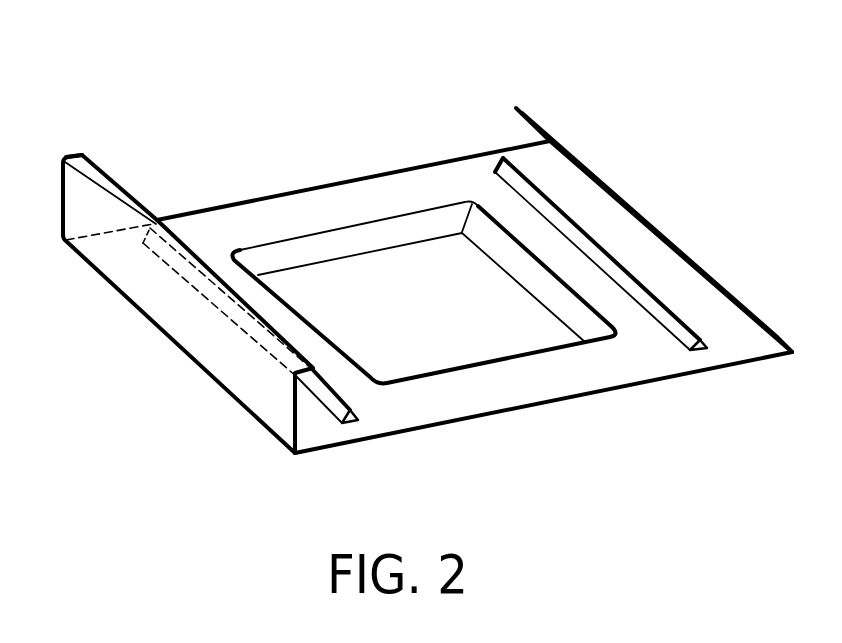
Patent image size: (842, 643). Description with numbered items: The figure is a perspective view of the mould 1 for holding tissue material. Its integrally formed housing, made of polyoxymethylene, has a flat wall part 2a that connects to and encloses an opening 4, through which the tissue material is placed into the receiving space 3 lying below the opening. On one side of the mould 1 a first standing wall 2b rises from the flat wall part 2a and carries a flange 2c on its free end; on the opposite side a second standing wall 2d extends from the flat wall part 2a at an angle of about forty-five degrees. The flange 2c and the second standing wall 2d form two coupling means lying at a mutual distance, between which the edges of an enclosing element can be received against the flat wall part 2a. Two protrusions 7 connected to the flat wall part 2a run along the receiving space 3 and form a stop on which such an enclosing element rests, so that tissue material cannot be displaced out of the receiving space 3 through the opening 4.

The mould 1 is at (646, 75).
The flat wall part 2a is at (542, 382).
The first standing wall 2b is at (177, 313).
The flange 2c is at (82, 166).
The second standing wall 2d is at (647, 223).
The receiving space 3 is at (447, 317).
The opening 4 is at (379, 285).
The protrusions 7 is at (707, 345).